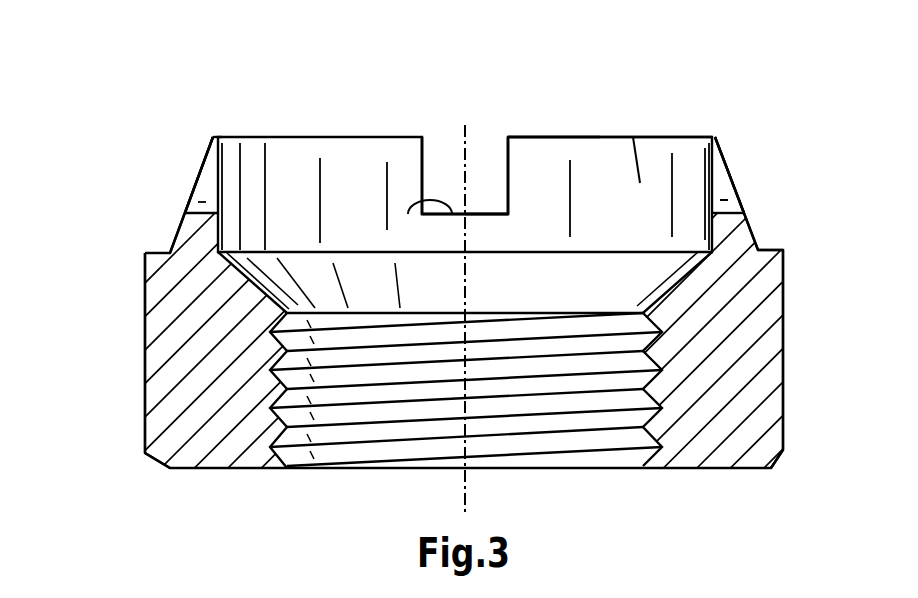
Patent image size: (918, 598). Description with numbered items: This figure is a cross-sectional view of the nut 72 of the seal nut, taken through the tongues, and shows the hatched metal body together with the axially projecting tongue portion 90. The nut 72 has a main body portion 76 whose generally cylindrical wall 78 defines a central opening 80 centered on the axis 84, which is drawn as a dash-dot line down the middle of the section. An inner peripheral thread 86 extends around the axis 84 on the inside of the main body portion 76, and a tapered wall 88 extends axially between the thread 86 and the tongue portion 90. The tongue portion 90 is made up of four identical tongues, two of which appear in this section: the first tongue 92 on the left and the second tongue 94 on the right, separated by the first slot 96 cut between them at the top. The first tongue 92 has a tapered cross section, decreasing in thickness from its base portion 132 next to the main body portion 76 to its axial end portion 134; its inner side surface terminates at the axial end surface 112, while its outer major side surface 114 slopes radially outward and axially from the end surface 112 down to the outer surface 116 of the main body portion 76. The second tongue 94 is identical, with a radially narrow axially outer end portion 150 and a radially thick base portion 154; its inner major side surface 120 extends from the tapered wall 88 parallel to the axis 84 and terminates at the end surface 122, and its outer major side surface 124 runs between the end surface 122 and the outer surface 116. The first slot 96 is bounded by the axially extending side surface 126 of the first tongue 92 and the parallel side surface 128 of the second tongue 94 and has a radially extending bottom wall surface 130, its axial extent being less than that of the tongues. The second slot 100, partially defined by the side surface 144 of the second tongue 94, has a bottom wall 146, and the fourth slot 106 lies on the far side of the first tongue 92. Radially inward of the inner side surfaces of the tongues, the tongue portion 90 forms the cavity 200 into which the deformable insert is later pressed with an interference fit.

The nut 72 is at (108, 313).
The main body portion 76 is at (140, 380).
The cylindrical wall 78 is at (728, 423).
The central opening 80 is at (533, 420).
The axis 84 is at (462, 490).
The inner peripheral thread 86 is at (303, 437).
The tapered wall 88 is at (655, 305).
The tongue portion 90 is at (155, 187).
The first tongue 92 is at (332, 130).
The second tongue 94 is at (596, 128).
The first slot 96 is at (446, 122).
The second slot 100 is at (700, 194).
The fourth slot 106 is at (230, 202).
The axial end surface 112 is at (216, 137).
The outer major side surface 114 is at (203, 167).
The outer surface 116 is at (145, 438).
The inner major side surface 120 is at (633, 137).
The end surface 122 is at (580, 137).
The outer major side surface 124 is at (723, 150).
The side surface 126 is at (423, 168).
The side surface 128 is at (507, 160).
The bottom wall surface 130 is at (453, 222).
The base portion 132 is at (198, 243).
The axial end portion 134 is at (253, 155).
The side surface 144 is at (728, 175).
The bottom wall 146 is at (731, 203).
The axially outer end portion 150 is at (692, 150).
The base portion 154 is at (737, 243).
The cavity 200 is at (488, 244).